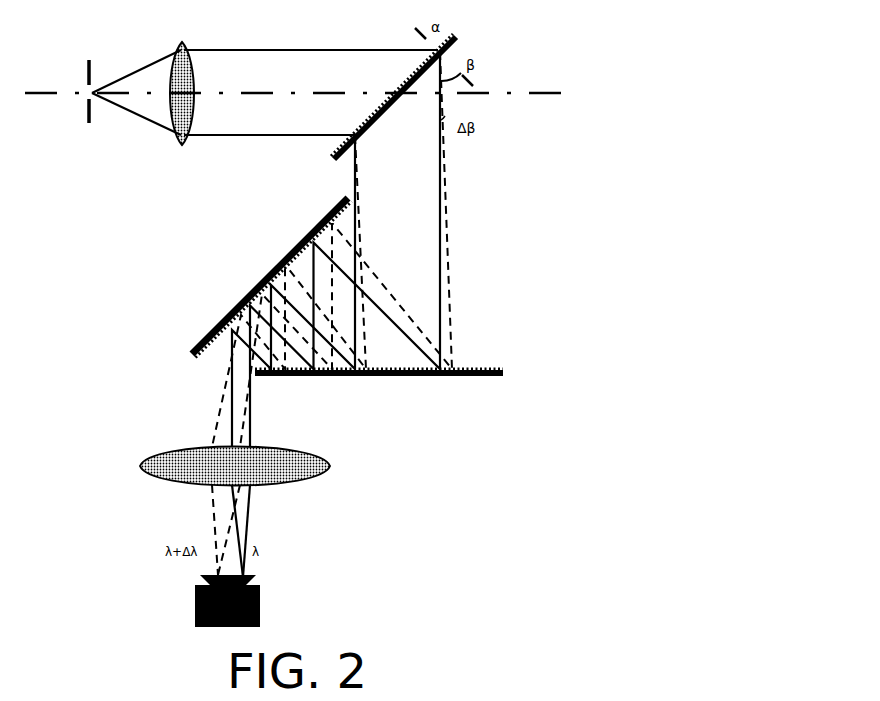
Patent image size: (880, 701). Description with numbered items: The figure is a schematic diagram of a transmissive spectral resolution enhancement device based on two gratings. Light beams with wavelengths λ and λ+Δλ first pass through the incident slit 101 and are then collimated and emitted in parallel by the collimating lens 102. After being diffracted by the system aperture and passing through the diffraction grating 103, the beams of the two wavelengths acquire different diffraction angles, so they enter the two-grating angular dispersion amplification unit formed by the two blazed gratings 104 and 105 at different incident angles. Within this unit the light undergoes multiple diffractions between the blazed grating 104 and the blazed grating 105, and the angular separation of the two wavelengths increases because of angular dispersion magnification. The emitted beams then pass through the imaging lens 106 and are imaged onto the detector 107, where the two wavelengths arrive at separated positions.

The incident slit 101 is at (93, 111).
The collimating lens 102 is at (187, 113).
The diffraction grating 103 is at (414, 86).
The blazed grating 104 is at (269, 278).
The blazed grating 105 is at (386, 390).
The imaging lens 106 is at (258, 466).
The detector 107 is at (257, 601).